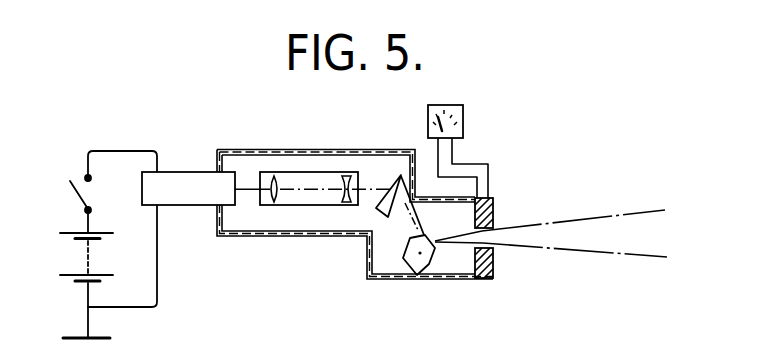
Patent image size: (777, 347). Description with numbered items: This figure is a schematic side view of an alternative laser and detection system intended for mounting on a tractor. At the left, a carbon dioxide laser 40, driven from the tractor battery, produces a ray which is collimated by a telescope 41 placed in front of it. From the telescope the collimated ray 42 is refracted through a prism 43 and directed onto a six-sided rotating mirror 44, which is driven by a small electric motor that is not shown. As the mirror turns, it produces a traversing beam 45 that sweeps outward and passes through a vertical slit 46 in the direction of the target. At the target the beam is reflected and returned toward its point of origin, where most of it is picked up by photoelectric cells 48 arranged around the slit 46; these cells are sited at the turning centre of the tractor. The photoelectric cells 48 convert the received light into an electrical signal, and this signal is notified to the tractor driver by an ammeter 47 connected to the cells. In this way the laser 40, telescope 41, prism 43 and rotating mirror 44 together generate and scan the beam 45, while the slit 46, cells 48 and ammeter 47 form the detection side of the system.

The carbon dioxide laser 40 is at (185, 172).
The telescope 41 is at (308, 172).
The ray 42 is at (365, 187).
The prism 43 is at (383, 213).
The six-sided rotating mirror 44 is at (428, 262).
The traversing beam 45 is at (576, 219).
The vertical slit 46 is at (487, 240).
The ammeter 47 is at (463, 122).
The photoelectric cells 48 is at (493, 207).